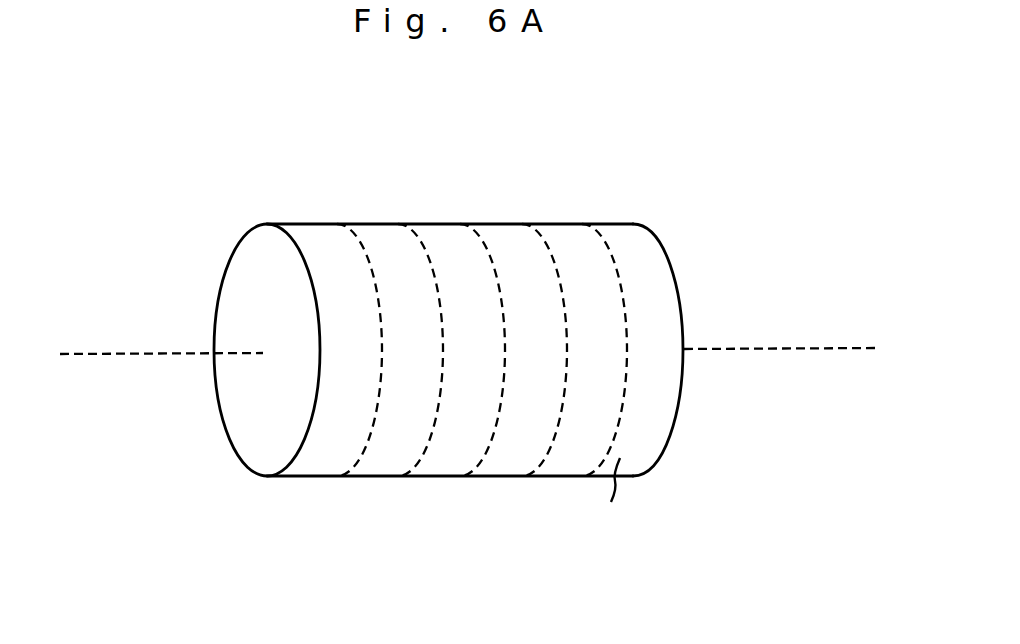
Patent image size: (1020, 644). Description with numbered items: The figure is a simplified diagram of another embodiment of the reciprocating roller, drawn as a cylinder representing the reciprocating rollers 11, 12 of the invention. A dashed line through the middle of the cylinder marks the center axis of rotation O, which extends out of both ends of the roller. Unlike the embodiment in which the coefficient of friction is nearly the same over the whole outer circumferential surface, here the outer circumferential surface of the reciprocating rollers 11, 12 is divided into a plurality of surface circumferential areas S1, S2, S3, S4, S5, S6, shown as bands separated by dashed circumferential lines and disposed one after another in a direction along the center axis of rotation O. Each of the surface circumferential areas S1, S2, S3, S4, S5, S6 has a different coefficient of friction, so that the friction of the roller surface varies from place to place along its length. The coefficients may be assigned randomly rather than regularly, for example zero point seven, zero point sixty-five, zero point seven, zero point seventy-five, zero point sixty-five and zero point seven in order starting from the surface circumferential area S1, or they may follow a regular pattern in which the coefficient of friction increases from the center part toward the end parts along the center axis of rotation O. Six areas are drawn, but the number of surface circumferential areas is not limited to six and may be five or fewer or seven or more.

The reciprocating roller 11 is at (453, 296).
The reciprocating roller 12 is at (448, 350).
The surface circumferential area S1 is at (314, 248).
The surface circumferential area S2 is at (376, 248).
The surface circumferential area S3 is at (441, 248).
The surface circumferential area S4 is at (503, 248).
The surface circumferential area S5 is at (560, 458).
The surface circumferential area S6 is at (601, 498).
The center axis of rotation O is at (87, 354).